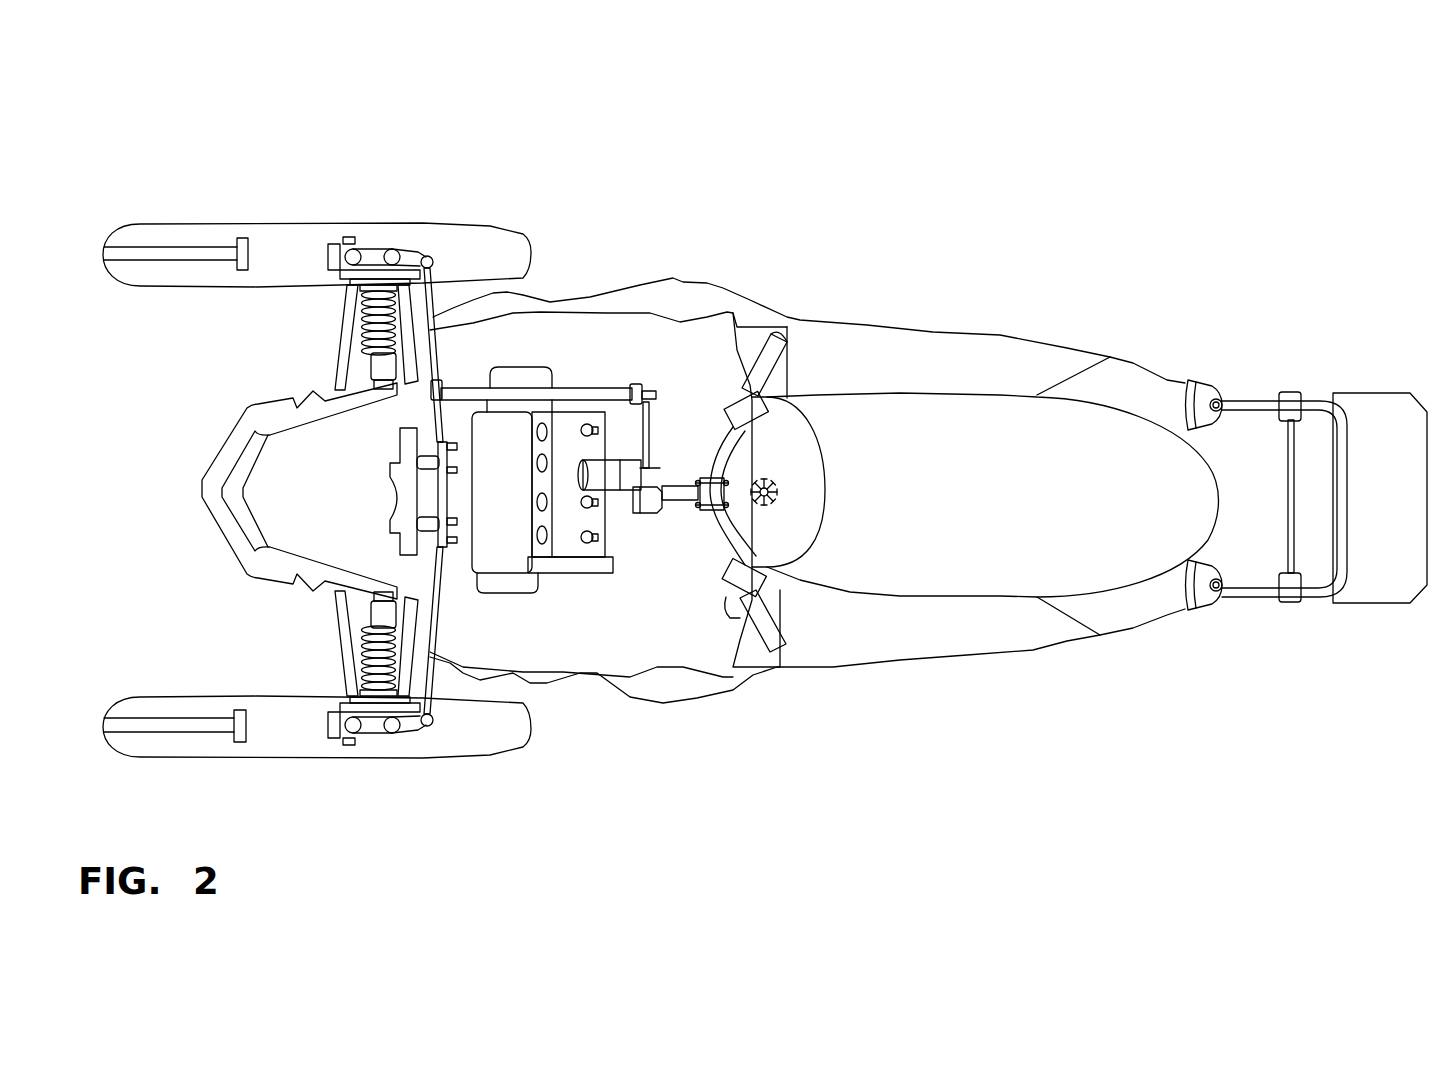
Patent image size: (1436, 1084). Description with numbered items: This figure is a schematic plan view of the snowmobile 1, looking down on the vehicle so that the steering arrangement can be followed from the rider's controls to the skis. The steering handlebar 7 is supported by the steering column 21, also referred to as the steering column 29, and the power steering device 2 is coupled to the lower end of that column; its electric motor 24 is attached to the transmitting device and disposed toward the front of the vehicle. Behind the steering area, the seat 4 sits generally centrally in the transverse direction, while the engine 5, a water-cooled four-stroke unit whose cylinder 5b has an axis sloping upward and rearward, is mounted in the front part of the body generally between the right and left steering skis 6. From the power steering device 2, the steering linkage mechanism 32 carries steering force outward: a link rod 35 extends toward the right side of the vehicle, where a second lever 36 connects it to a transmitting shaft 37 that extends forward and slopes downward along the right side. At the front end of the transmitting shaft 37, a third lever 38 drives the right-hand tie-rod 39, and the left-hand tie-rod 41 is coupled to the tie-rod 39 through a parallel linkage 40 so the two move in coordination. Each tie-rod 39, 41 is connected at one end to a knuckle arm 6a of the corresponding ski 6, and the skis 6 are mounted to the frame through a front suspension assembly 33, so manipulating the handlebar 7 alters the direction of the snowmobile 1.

The snowmobile 1 is at (916, 230).
The power steering device 2 is at (652, 527).
The seat 4 is at (993, 413).
The engine 5 is at (508, 605).
The cylinder 5b is at (563, 542).
The steering ski 6 is at (231, 224).
The knuckle arm 6a is at (415, 255).
The steering handlebar 7 is at (770, 360).
The steering column 21 is at (677, 512).
The electric motor 24 is at (622, 492).
The steering column 29 is at (698, 514).
The steering linkage mechanism 32 is at (612, 382).
The front suspension assembly 33 is at (330, 333).
The link rod 35 is at (662, 468).
The second lever 36 is at (637, 425).
The transmitting shaft 37 is at (572, 392).
The third lever 38 is at (444, 389).
The tie-rod 39 is at (429, 330).
The parallel linkage 40 is at (414, 447).
The tie-rod 41 is at (438, 618).